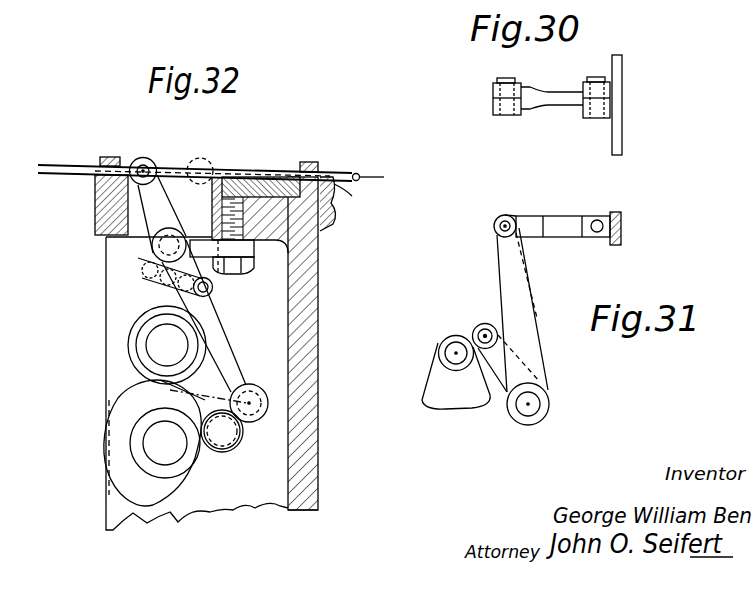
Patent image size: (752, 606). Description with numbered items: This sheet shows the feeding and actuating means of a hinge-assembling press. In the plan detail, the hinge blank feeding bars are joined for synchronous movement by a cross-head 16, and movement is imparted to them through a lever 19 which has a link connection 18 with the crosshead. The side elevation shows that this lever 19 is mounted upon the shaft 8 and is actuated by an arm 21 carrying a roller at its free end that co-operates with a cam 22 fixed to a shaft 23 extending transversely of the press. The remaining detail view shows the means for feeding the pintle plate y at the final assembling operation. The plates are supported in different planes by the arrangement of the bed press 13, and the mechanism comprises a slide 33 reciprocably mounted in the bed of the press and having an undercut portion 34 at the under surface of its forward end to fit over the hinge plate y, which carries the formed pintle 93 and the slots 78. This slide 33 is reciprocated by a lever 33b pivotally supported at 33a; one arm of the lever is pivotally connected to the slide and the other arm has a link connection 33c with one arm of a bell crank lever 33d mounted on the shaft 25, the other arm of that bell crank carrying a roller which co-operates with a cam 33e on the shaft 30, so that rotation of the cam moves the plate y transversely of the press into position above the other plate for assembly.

In FIG. 32, the bed press 13 is at (319, 312).
In FIG. 32, the undercut portion 34 is at (337, 172).
In FIG. 32, the slots 78 is at (359, 177).
In FIG. 32, the pintle 93 is at (384, 183).
In FIG. 32, the pintle plate y is at (353, 197).
In FIG. 32, the slide 33 is at (168, 166).
In FIG. 32, the lever 33b is at (148, 217).
In FIG. 32, the pivot 33a is at (162, 247).
In FIG. 32, the link connection 33c is at (165, 288).
In FIG. 32, the shaft 25 is at (155, 347).
In FIG. 32, the bell crank lever 33d is at (222, 364).
In FIG. 32, the cam 33e is at (114, 432).
In FIG. 32, the shaft 30 is at (174, 452).
In FIG. 30, the lever 19 is at (493, 98).
In FIG. 31, the lever 19 is at (537, 318).
In FIG. 30, the link connection 18 is at (556, 100).
In FIG. 31, the link connection 18 is at (567, 235).
In FIG. 30, the cross-head 16 is at (614, 97).
In FIG. 31, the cross-head 16 is at (622, 226).
In FIG. 31, the shaft 8 is at (528, 406).
In FIG. 31, the arm 21 is at (500, 392).
In FIG. 31, the shaft 23 is at (455, 355).
In FIG. 31, the cam 22 is at (448, 403).